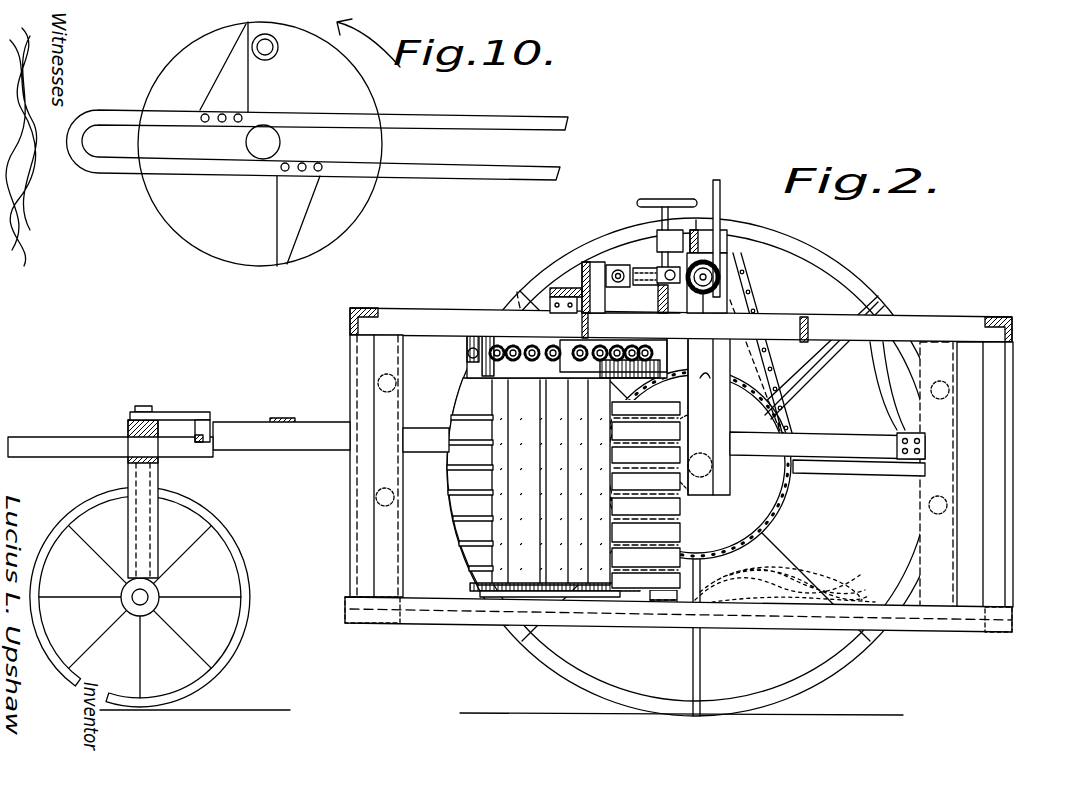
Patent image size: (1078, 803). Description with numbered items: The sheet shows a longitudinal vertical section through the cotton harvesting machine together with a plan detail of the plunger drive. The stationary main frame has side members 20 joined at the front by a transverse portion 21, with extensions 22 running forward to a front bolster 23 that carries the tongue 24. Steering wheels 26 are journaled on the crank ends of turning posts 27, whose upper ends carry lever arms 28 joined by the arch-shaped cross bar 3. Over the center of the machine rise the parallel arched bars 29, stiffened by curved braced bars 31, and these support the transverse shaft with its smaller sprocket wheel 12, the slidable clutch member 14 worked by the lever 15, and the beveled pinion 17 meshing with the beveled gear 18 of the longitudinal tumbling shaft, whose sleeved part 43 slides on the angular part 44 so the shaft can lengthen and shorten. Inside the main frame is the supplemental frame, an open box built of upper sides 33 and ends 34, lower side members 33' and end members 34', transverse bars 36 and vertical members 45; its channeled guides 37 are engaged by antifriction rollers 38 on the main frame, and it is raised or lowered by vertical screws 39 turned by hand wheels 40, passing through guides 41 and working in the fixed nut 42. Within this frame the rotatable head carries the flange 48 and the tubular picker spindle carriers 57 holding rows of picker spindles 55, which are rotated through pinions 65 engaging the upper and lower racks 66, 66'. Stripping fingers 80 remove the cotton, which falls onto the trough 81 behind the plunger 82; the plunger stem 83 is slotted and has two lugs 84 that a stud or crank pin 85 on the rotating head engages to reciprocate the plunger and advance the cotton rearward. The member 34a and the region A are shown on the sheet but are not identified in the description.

In FIG. 2, the arch-shaped cross bar 3 is at (208, 424).
In FIG. 2, the smaller sprocket wheel 12 is at (696, 464).
In FIG. 2, the slidable clutch member 14 is at (710, 281).
In FIG. 2, the lever 15 is at (722, 196).
In FIG. 2, the beveled pinion 17 is at (704, 300).
In FIG. 2, the beveled gear 18 is at (722, 276).
In FIG. 2, the side members 20 is at (420, 445).
In FIG. 2, the transverse portion 21 is at (758, 384).
In FIG. 2, the extensions 22 is at (232, 448).
In FIG. 2, the front bolster 23 is at (128, 428).
In FIG. 2, the tongue 24 is at (31, 447).
In FIG. 2, the steering wheels 26 is at (236, 545).
In FIG. 2, the turning posts 27 is at (143, 406).
In FIG. 2, the lever arms 28 is at (178, 410).
In FIG. 2, the parallel arched bars 29 is at (712, 240).
In FIG. 2, the curved braced bars 31 is at (520, 302).
In FIG. 2, the parallel sides 33 is at (681, 325).
In FIG. 2, the parallel side members 33' is at (678, 627).
In FIG. 2, the parallel ends 34 is at (678, 325).
In FIG. 2, the parallel end members 34' is at (352, 610).
In FIG. 2, the lower corner plate 34a is at (1012, 618).
In FIG. 2, the transverse bars 36 is at (600, 324).
In FIG. 2, the channeled guides 37 is at (425, 575).
In FIG. 2, the antifriction rollers 38 is at (378, 385).
In FIG. 2, the vertical screws 39 is at (652, 262).
In FIG. 2, the hand wheels 40 is at (666, 199).
In FIG. 2, the guides 41 is at (668, 238).
In FIG. 2, the internally threaded nut 42 is at (660, 327).
In FIG. 2, the sleeved shaft part 43 is at (648, 287).
In FIG. 2, the angular shaft part 44 is at (600, 294).
In FIG. 2, the vertical members 45 is at (350, 565).
In FIG. 2, the upstanding flange 48 is at (480, 368).
In FIG. 2, the picker spindles 55 is at (470, 545).
In FIG. 2, the picker spindle carriers 57 is at (590, 590).
In FIG. 2, the pinions 65 is at (560, 334).
In FIG. 2, the rack 66 is at (613, 382).
In FIG. 2, the rack 66' is at (456, 356).
In FIG. 2, the stripping fingers 80 is at (660, 510).
In FIG. 2, the bottom or trough 81 is at (752, 605).
In FIG. 2, the plunger 82 is at (664, 600).
In FIG. 10, the stem 83 is at (418, 131).
In FIG. 2, the stem 83 is at (608, 597).
In FIG. 10, the lugs 84 is at (232, 93).
In FIG. 10, the stud or crank pin 85 is at (278, 52).
In FIG. 2, the hopper A is at (516, 481).